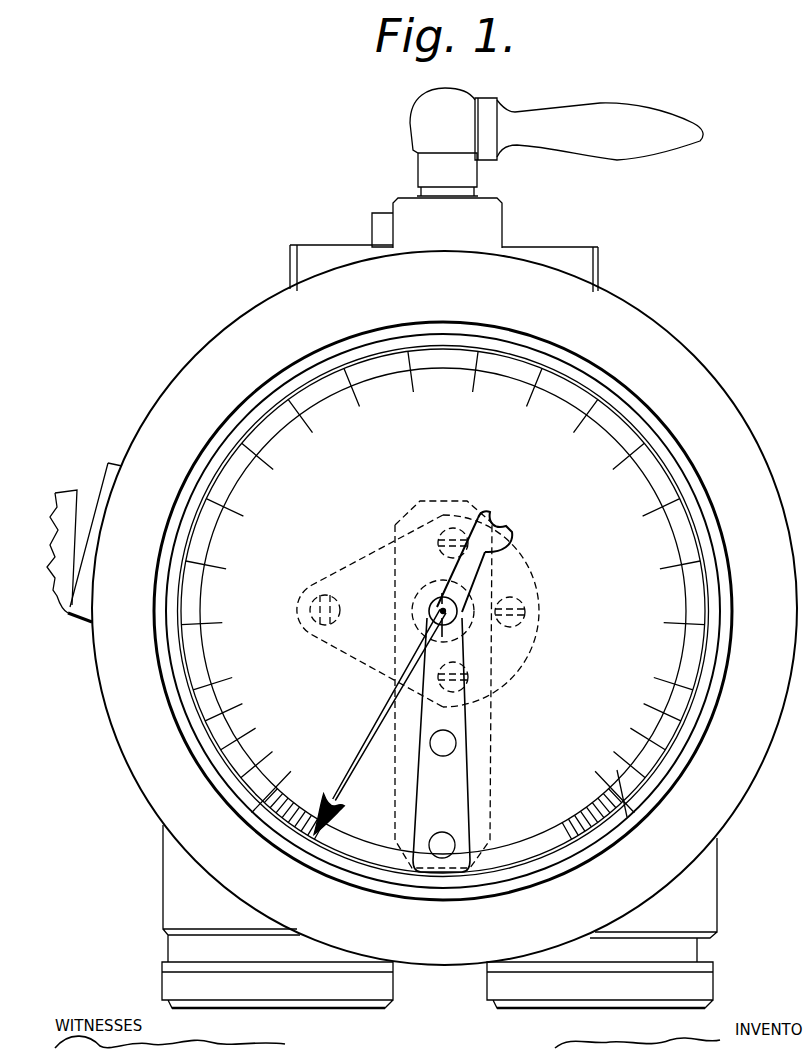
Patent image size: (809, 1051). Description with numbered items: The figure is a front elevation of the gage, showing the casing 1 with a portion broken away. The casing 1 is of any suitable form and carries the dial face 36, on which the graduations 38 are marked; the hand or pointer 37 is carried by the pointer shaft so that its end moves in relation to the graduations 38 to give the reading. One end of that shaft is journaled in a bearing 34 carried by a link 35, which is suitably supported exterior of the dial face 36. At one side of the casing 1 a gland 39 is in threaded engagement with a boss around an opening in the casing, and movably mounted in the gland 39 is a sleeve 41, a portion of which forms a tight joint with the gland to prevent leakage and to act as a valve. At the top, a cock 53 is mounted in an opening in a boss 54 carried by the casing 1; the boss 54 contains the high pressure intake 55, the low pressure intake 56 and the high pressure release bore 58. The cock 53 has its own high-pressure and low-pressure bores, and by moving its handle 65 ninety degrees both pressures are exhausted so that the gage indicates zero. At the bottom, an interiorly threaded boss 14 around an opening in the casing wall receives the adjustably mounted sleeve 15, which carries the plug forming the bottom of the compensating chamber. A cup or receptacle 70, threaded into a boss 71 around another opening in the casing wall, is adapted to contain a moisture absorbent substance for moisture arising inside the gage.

The casing 1 is at (444, 608).
The interiorly threaded boss 14 is at (698, 898).
The sleeve 15 is at (680, 988).
The bearing 34 is at (440, 606).
The link 35 is at (440, 776).
The dial face 36 is at (443, 611).
The hand or pointer 37 is at (368, 737).
The graduations 38 is at (262, 793).
The gland 39 is at (108, 486).
The sleeve 41 is at (63, 502).
The cock 53 is at (430, 194).
The boss 54 is at (488, 232).
The high pressure intake 55 is at (293, 267).
The low pressure intake 56 is at (602, 262).
The high pressure release bore 58 is at (378, 224).
The handle 65 is at (589, 129).
The cup or receptacle 70 is at (182, 984).
The boss 71 is at (176, 899).